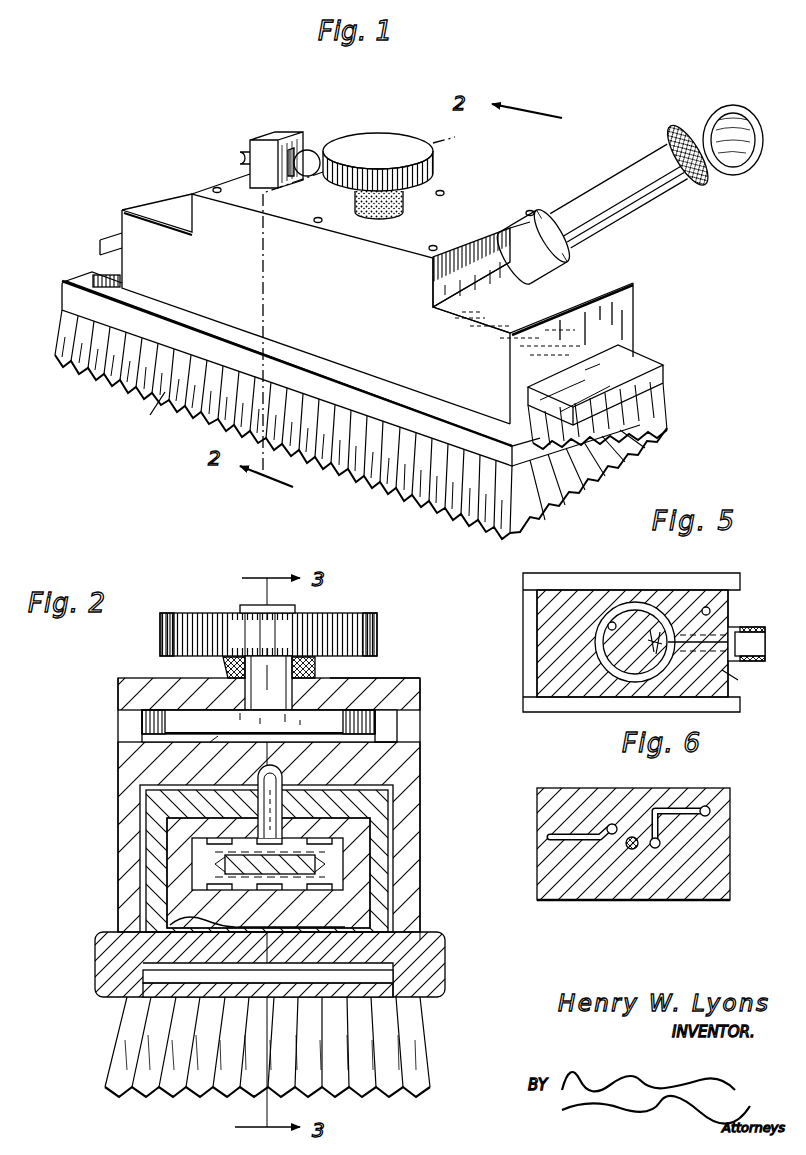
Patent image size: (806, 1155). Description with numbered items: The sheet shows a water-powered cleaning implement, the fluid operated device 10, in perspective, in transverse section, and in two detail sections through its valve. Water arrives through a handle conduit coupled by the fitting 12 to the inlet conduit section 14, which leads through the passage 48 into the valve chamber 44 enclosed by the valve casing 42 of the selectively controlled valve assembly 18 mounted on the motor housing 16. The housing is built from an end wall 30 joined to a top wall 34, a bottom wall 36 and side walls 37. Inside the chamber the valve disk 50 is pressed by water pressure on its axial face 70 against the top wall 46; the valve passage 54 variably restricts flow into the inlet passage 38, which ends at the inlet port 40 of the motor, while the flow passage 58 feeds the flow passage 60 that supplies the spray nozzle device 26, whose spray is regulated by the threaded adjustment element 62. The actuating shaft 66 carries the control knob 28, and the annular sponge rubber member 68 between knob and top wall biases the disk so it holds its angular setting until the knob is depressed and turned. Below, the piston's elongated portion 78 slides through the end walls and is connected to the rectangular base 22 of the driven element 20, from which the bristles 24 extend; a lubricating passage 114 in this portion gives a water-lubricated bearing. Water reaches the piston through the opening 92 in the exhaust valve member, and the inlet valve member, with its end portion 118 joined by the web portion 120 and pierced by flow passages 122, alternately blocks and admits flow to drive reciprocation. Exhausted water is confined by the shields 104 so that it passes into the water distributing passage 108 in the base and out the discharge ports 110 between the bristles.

In FIG. 1, the fluid operated device 10 is at (215, 158).
In FIG. 1, the fitting 12 is at (698, 125).
In FIG. 1, the inlet conduit section 14 is at (598, 196).
In FIG. 5, the inlet conduit section 14 is at (748, 627).
In FIG. 1, the motor housing 16 is at (120, 218).
In FIG. 2, the motor housing 16 is at (425, 728).
In FIG. 1, the selectively controlled valve assembly 18 is at (475, 194).
In FIG. 2, the selectively controlled valve assembly 18 is at (396, 676).
In FIG. 1, the driven element 20 is at (80, 376).
In FIG. 2, the driven element 20 is at (115, 1105).
In FIG. 1, the rectangular base 22 is at (72, 296).
In FIG. 2, the rectangular base 22 is at (95, 962).
In FIG. 1, the bristles 24 is at (150, 414).
In FIG. 2, the bristles 24 is at (128, 1058).
In FIG. 1, the spray nozzle device 26 is at (264, 130).
In FIG. 1, the control knob 28 is at (366, 147).
In FIG. 2, the control knob 28 is at (345, 628).
In FIG. 1, the end wall 30 is at (633, 322).
In FIG. 1, the top wall 34 is at (598, 285).
In FIG. 2, the top wall 34 is at (155, 775).
In FIG. 2, the bottom wall 36 is at (420, 950).
In FIG. 1, the side walls 37 is at (167, 228).
In FIG. 2, the side walls 37 is at (125, 841).
In FIG. 5, the inlet passage 38 is at (683, 592).
In FIG. 2, the inlet port 40 is at (277, 774).
In FIG. 2, the valve casing 42 is at (130, 720).
In FIG. 5, the valve casing 42 is at (705, 592).
In FIG. 2, the valve chamber 44 is at (385, 740).
In FIG. 1, the top wall 46 is at (503, 208).
In FIG. 2, the top wall 46 is at (135, 692).
In FIG. 6, the top wall 46 is at (722, 838).
In FIG. 5, the passage 48 is at (740, 680).
In FIG. 2, the valve disk 50 is at (182, 722).
In FIG. 6, the valve passage 54 is at (688, 810).
In FIG. 5, the flow passage 58 is at (609, 622).
In FIG. 6, the flow passage 60 is at (560, 843).
In FIG. 1, the adjustment element 62 is at (309, 160).
In FIG. 2, the actuating shaft 66 is at (262, 660).
In FIG. 6, the actuating shaft 66 is at (632, 837).
In FIG. 1, the annular sponge rubber member 68 is at (355, 203).
In FIG. 2, the annular sponge rubber member 68 is at (315, 669).
In FIG. 2, the axial face 70 is at (222, 736).
In FIG. 1, the elongated portion 78 is at (655, 412).
In FIG. 2, the elongated portion 78 is at (175, 901).
In FIG. 2, the opening 92 is at (282, 801).
In FIG. 1, the shields 104 is at (640, 358).
In FIG. 2, the water distributing passage 108 is at (380, 985).
In FIG. 2, the discharge ports 110 is at (172, 992).
In FIG. 2, the lubricating passage 114 is at (170, 924).
In FIG. 2, the end portion 118 is at (340, 878).
In FIG. 2, the web portion 120 is at (318, 865).
In FIG. 2, the flow passages 122 is at (221, 838).